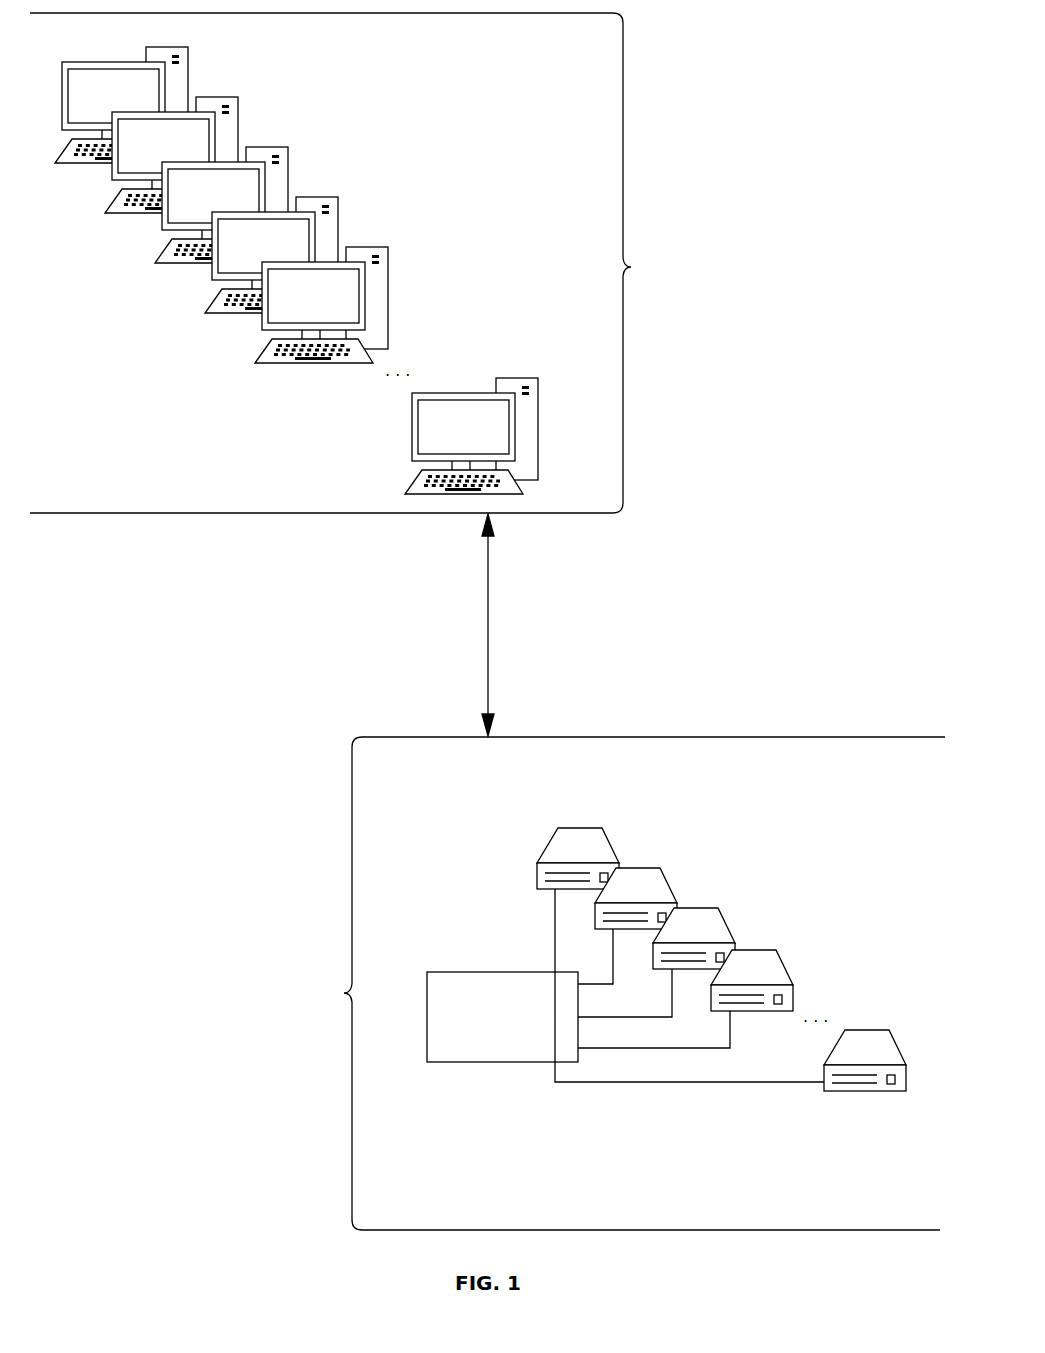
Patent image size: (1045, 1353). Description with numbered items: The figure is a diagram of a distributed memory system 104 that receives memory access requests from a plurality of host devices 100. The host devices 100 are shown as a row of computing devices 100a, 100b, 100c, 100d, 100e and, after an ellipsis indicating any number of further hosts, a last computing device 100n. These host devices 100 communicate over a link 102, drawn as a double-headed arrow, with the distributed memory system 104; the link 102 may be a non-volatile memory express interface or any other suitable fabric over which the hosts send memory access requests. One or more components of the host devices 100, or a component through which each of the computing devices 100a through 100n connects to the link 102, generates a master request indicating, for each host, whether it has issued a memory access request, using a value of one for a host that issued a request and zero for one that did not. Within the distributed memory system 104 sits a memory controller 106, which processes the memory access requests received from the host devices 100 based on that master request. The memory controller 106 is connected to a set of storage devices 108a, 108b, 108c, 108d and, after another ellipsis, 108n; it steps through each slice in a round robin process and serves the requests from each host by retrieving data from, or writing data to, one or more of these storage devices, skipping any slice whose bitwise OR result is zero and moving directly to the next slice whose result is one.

The host devices 100 is at (352, 263).
The computing device 100a is at (203, 43).
The computing device 100b is at (253, 93).
The computing device 100c is at (303, 143).
The computing device 100d is at (353, 193).
The computing device 100e is at (403, 243).
The computing device 100n is at (553, 375).
The link 102 is at (489, 612).
The distributed memory system 104 is at (624, 983).
The memory controller 106 is at (482, 970).
The storage device 108a is at (623, 827).
The storage device 108b is at (681, 868).
The storage device 108c is at (739, 908).
The storage device 108d is at (797, 951).
The storage device 108n is at (910, 1029).